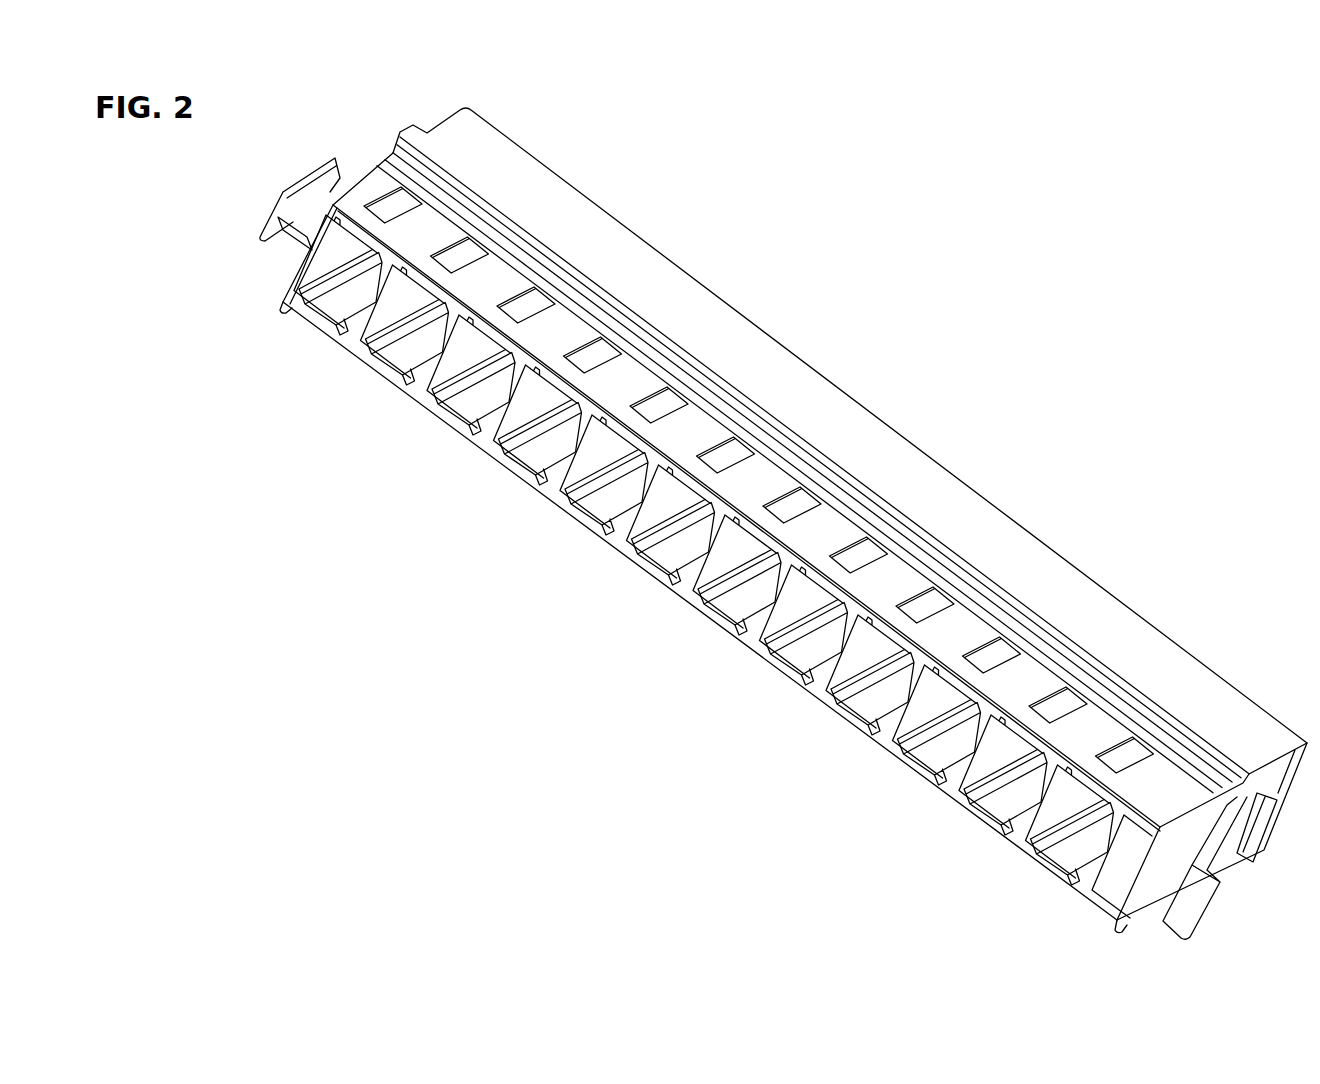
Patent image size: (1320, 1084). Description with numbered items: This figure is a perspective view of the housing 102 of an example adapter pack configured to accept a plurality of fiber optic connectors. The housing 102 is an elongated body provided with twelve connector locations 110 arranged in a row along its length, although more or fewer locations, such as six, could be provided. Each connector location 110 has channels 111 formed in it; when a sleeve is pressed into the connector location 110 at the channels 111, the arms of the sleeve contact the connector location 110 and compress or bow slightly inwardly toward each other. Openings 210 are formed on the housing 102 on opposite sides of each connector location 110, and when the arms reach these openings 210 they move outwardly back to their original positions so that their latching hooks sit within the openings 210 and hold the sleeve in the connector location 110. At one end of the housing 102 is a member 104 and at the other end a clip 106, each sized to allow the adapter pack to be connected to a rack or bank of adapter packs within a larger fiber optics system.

The housing 102 is at (1019, 537).
The member 104 is at (305, 185).
The clip 106 is at (1200, 907).
The connector locations 110 is at (380, 372).
The channels 111 is at (592, 507).
The openings 210 is at (537, 303).